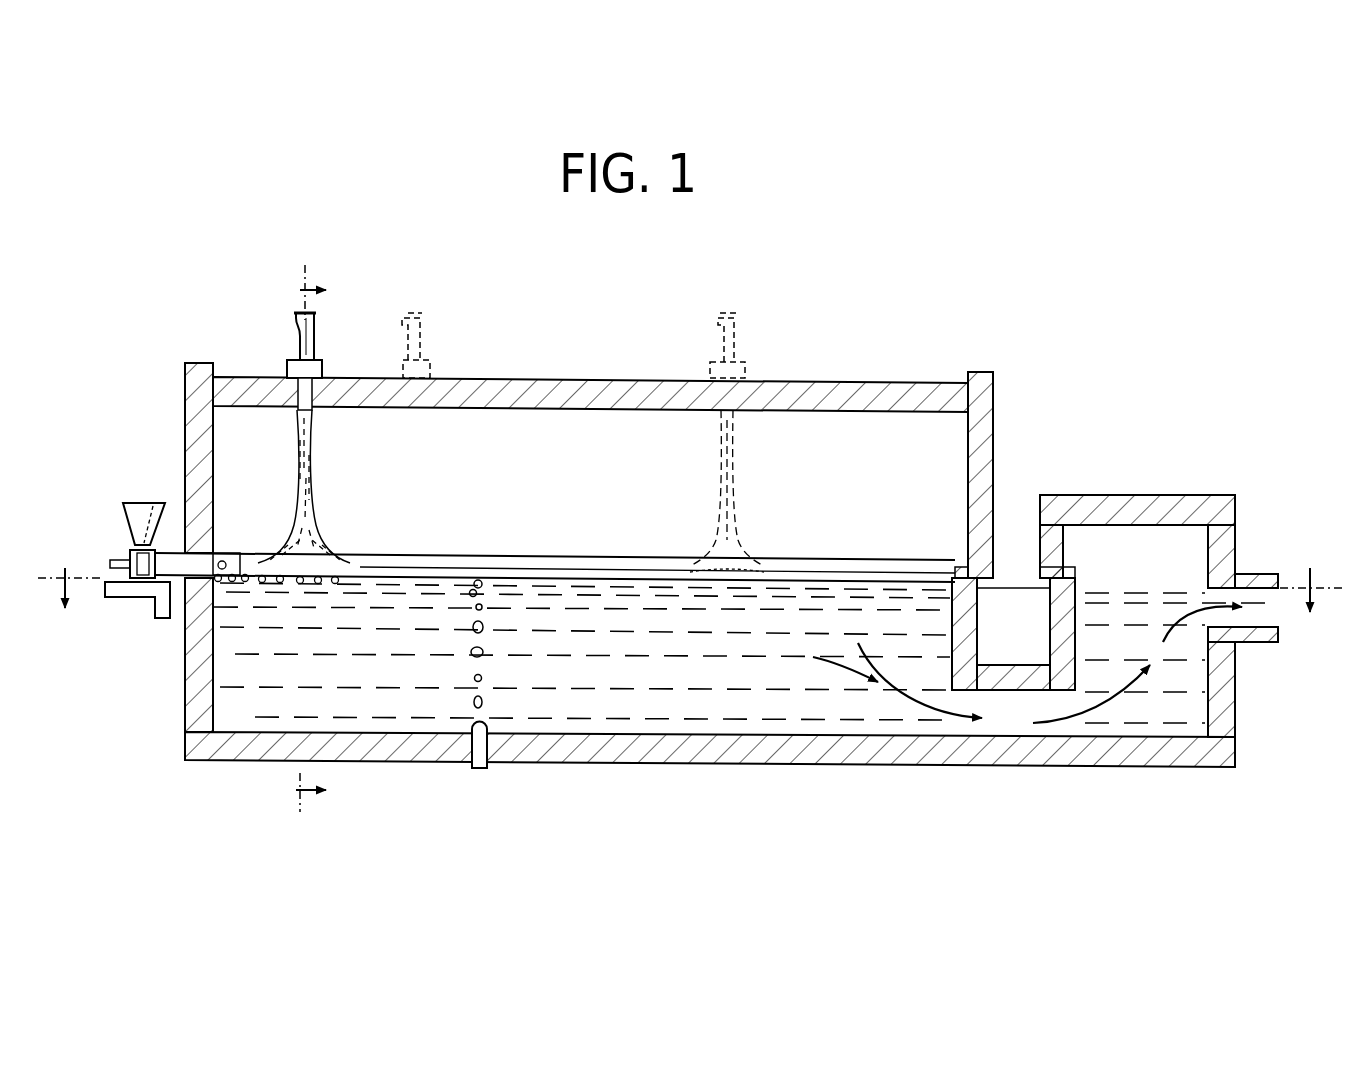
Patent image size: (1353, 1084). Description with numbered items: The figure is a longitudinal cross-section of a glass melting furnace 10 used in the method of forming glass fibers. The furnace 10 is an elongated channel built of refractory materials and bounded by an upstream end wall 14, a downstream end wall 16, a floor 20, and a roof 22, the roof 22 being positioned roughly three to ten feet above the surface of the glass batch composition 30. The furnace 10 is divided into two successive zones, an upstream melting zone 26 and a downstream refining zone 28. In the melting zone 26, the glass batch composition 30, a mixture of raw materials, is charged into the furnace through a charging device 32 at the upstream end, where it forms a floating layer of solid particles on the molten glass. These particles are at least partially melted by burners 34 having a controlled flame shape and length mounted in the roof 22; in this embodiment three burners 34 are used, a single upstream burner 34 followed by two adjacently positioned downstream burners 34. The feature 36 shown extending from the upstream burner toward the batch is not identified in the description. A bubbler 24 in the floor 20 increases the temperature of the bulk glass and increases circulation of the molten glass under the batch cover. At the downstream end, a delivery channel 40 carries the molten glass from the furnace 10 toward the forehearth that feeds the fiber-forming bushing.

The glass melting furnace 10 is at (1001, 336).
The upstream end wall 14 is at (190, 440).
The downstream end wall 16 is at (998, 445).
The floor 20 is at (832, 763).
The roof 22 is at (560, 380).
The bubbler 24 is at (487, 767).
The upstream melting zone 26 is at (373, 522).
The downstream refining zone 28 is at (915, 525).
The glass batch composition 30 is at (243, 560).
The charging device 32 is at (137, 595).
The burner 34 is at (300, 345).
The spray stream 36 is at (312, 440).
The delivery channel 40 is at (1258, 575).